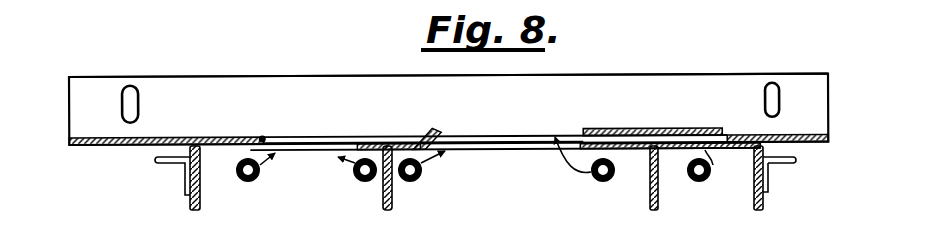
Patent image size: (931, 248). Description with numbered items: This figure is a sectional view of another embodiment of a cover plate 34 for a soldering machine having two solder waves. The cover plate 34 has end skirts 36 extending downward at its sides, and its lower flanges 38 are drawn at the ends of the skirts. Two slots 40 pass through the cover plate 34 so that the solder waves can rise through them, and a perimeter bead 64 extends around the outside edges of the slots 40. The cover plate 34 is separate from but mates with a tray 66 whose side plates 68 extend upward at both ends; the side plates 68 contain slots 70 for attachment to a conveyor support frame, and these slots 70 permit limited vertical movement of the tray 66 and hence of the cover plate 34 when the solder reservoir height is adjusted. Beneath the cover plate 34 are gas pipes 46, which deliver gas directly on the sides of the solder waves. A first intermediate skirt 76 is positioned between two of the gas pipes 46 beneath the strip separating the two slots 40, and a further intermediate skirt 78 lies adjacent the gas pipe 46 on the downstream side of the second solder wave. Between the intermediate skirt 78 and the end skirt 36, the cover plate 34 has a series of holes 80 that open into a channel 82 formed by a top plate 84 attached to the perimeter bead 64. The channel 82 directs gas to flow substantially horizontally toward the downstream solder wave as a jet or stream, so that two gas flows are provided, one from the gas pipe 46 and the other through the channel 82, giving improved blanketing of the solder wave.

The cover plate 34 is at (462, 113).
The skirt 36 is at (197, 206).
The bracket flange 38 is at (798, 182).
The slot 40 is at (315, 143).
The gas pipe 46 is at (249, 182).
The perimeter bead 64 is at (262, 139).
The tray 66 is at (106, 146).
The side plate 68 is at (301, 88).
The slot 70 is at (125, 99).
The first intermediate skirt 76 is at (393, 203).
The intermediate skirt 78 is at (648, 192).
The hole 80 is at (726, 166).
The channel 82 is at (677, 141).
The top plate 84 is at (617, 130).